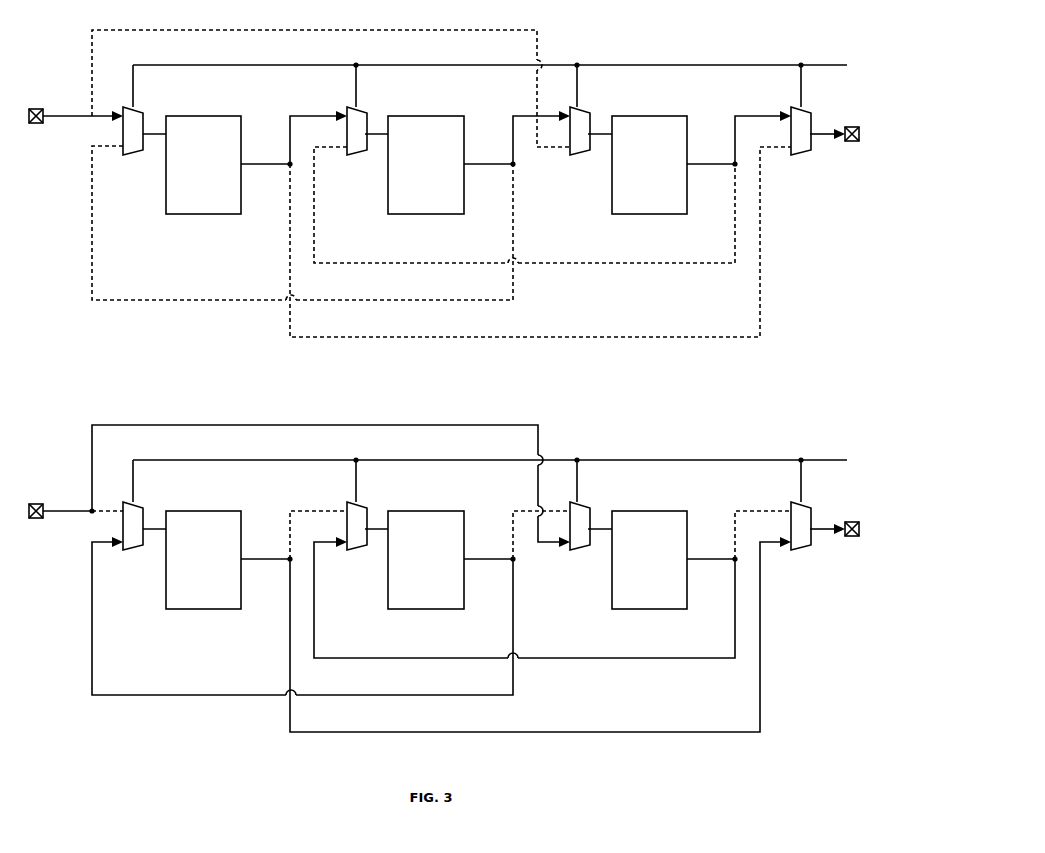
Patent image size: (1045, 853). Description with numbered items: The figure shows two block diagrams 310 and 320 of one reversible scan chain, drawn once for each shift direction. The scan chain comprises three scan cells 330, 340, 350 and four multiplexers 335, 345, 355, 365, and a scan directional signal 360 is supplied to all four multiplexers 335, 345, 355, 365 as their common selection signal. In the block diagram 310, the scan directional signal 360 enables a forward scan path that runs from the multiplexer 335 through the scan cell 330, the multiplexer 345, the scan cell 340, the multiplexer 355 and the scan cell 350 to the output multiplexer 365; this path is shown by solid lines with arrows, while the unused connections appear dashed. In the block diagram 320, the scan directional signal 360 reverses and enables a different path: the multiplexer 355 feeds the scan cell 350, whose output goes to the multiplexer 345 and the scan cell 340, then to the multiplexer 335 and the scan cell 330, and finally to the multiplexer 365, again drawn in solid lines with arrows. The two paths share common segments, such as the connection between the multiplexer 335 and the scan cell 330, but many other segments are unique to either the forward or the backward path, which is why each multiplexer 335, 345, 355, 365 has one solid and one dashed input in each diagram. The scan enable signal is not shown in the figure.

The block diagram 310 is at (823, 347).
The block diagram 320 is at (444, 607).
The scan cell 330 is at (193, 188).
The scan cell 340 is at (416, 188).
The scan cell 350 is at (639, 188).
The multiplexer 335 is at (129, 168).
The multiplexer 345 is at (350, 168).
The multiplexer 355 is at (575, 168).
The multiplexer 365 is at (805, 168).
The scan directional signal 360 is at (539, 276).